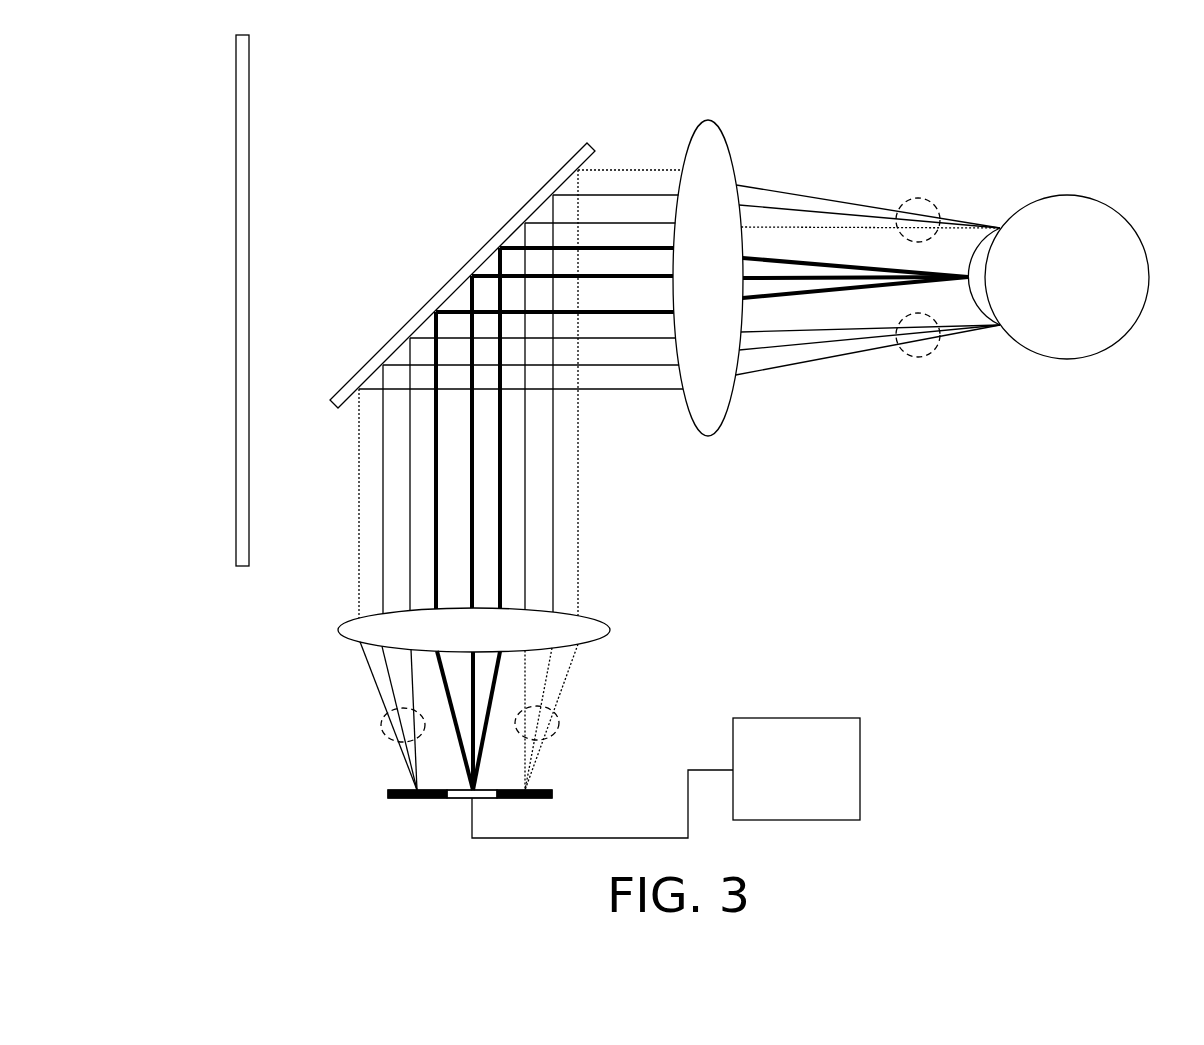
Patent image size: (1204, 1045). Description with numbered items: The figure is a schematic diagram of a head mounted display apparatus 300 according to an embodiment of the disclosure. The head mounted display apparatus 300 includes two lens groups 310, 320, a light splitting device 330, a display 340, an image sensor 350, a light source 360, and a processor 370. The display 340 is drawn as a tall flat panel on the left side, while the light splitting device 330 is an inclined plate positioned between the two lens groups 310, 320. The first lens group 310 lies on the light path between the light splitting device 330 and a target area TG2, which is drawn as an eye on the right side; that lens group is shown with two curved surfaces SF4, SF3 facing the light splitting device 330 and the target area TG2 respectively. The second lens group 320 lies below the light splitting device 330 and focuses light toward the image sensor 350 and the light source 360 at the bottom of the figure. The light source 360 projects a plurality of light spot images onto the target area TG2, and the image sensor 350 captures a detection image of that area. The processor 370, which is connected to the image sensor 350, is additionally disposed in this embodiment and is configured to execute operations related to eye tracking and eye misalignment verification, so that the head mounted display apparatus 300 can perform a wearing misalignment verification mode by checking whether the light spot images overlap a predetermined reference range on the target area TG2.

The head mounted display apparatus 300 is at (907, 586).
The lens group 310 is at (720, 410).
The lens group 320 is at (588, 628).
The light splitting device 330 is at (492, 246).
The display 340 is at (243, 462).
The image sensor 350 is at (462, 797).
The light source 360 is at (709, 686).
The processor 370 is at (862, 769).
The third surface of first lens SF3 is at (732, 148).
The fourth surface of first lens SF4 is at (684, 148).
The target area TG2 is at (1108, 337).